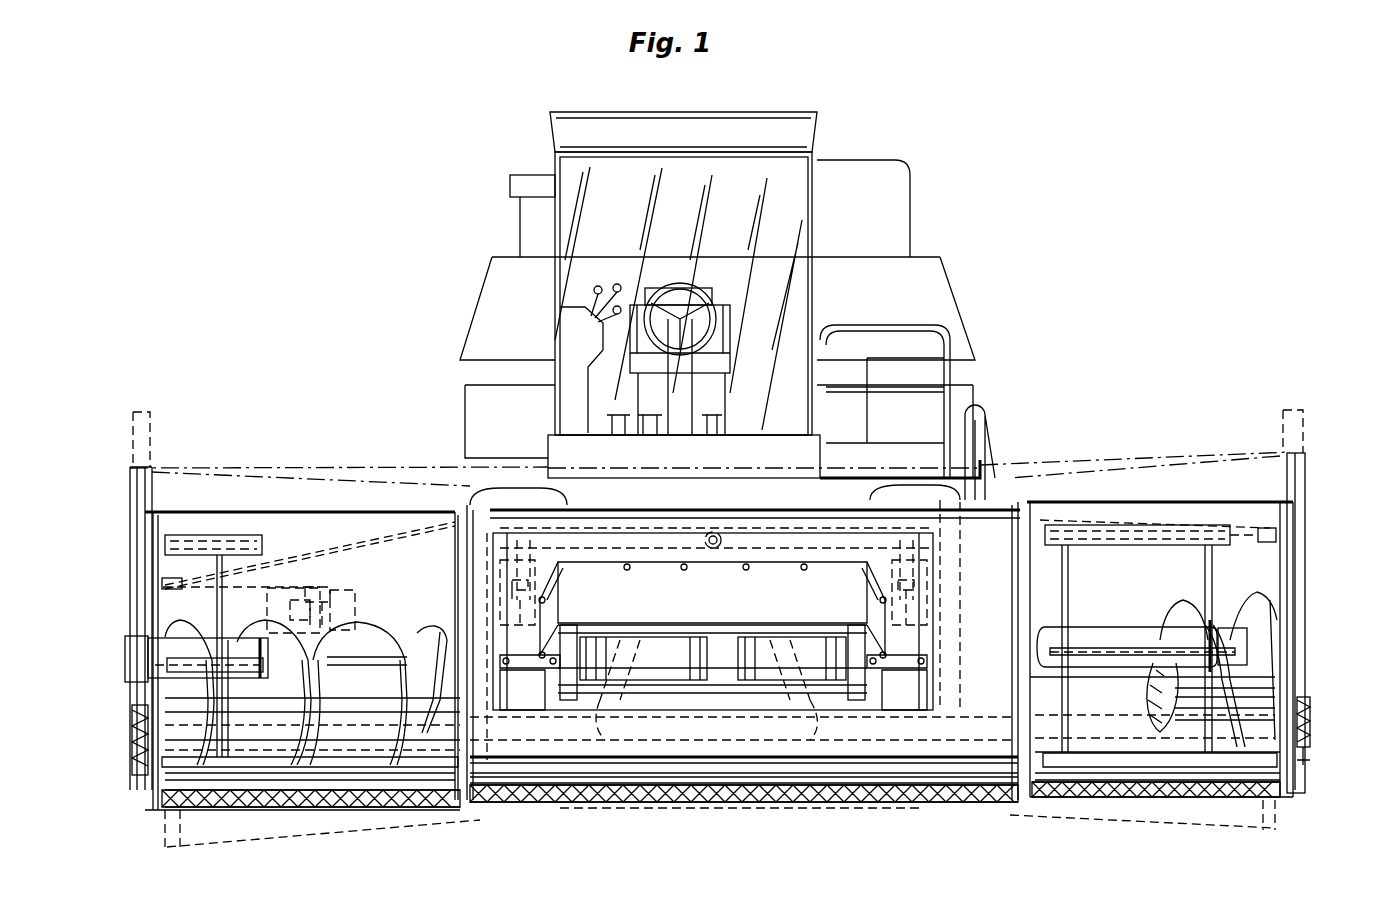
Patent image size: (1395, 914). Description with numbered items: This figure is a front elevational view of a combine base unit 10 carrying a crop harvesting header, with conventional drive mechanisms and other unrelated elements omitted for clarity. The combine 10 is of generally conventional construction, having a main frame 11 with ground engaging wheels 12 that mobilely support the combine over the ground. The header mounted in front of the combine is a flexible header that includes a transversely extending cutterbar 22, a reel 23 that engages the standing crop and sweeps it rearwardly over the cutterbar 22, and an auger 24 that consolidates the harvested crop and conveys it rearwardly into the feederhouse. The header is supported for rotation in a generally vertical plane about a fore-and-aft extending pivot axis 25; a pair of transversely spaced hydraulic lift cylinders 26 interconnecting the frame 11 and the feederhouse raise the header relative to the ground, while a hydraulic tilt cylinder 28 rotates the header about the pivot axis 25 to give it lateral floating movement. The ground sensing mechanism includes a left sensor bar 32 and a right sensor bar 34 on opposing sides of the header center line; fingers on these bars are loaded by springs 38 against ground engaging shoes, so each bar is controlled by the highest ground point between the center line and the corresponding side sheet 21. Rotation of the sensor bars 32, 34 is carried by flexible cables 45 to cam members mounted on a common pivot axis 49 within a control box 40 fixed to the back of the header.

The combine base unit 10 is at (893, 197).
The main frame 11 is at (548, 475).
The ground engaging wheels 12 is at (985, 490).
The side sheet 21 is at (1300, 555).
The cutterbar 22 is at (1180, 850).
The reel 23 is at (1093, 545).
The auger 24 is at (1177, 620).
The pivot axis 25 is at (716, 560).
The hydraulic lift cylinders 26 is at (767, 633).
The hydraulic tilt cylinder 28 is at (915, 625).
The left sensor bar 32 is at (752, 805).
The right sensor bar 34 is at (670, 805).
The springs 38 is at (1312, 725).
The control box 40 is at (342, 583).
The flexible cables 45 is at (1095, 515).
The pivot axis 49 is at (317, 587).